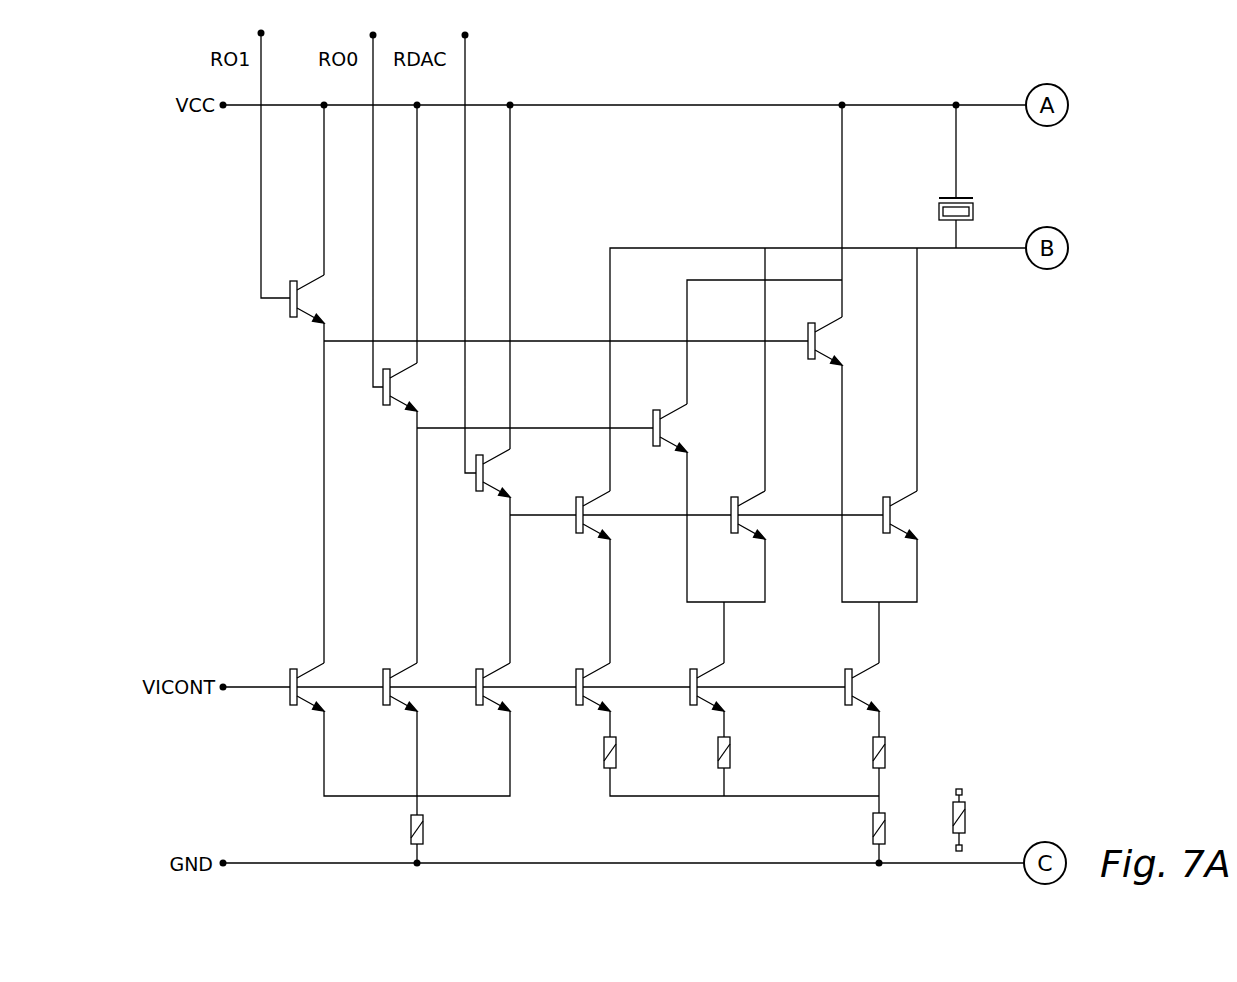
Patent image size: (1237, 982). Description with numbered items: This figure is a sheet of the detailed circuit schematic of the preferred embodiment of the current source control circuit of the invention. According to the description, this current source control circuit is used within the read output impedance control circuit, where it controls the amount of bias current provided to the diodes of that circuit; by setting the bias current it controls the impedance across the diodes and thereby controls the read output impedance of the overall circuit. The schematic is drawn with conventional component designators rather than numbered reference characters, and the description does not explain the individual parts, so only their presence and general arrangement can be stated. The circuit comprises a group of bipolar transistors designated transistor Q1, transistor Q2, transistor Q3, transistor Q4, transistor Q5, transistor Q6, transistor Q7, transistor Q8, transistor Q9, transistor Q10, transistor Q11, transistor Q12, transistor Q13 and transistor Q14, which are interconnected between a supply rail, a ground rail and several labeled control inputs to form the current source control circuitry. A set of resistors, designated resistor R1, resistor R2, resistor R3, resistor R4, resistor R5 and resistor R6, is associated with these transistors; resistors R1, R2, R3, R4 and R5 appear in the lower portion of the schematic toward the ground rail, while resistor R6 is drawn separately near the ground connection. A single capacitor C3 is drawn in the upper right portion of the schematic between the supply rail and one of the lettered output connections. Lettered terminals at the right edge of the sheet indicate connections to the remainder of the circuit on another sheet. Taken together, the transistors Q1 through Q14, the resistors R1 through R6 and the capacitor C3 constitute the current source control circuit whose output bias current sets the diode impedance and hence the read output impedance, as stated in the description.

The transistor Q1 is at (304, 677).
The transistor Q2 is at (314, 299).
The transistor Q3 is at (397, 677).
The transistor Q4 is at (405, 387).
The transistor Q5 is at (491, 677).
The transistor Q6 is at (498, 473).
The transistor Q7 is at (592, 677).
The transistor Q8 is at (607, 515).
The transistor Q9 is at (675, 428).
The transistor Q10 is at (700, 677).
The transistor Q11 is at (766, 515).
The transistor Q12 is at (836, 341).
The transistor Q13 is at (855, 677).
The transistor Q14 is at (912, 515).
The resistor R1 is at (403, 829).
The resistor R2 is at (597, 752).
The resistor R3 is at (711, 752).
The resistor R4 is at (866, 828).
The resistor R5 is at (866, 752).
The resistor R6 is at (946, 820).
The capacitor C3 is at (940, 209).